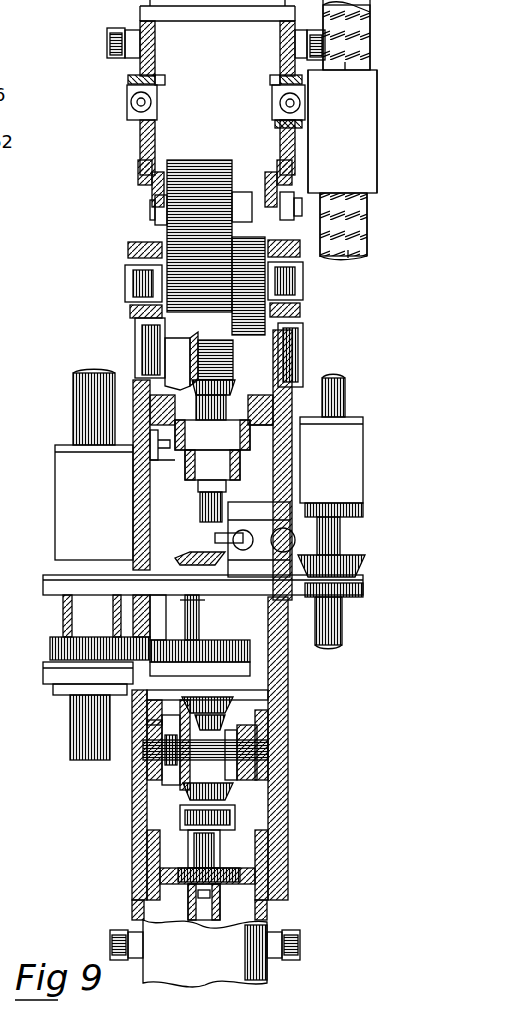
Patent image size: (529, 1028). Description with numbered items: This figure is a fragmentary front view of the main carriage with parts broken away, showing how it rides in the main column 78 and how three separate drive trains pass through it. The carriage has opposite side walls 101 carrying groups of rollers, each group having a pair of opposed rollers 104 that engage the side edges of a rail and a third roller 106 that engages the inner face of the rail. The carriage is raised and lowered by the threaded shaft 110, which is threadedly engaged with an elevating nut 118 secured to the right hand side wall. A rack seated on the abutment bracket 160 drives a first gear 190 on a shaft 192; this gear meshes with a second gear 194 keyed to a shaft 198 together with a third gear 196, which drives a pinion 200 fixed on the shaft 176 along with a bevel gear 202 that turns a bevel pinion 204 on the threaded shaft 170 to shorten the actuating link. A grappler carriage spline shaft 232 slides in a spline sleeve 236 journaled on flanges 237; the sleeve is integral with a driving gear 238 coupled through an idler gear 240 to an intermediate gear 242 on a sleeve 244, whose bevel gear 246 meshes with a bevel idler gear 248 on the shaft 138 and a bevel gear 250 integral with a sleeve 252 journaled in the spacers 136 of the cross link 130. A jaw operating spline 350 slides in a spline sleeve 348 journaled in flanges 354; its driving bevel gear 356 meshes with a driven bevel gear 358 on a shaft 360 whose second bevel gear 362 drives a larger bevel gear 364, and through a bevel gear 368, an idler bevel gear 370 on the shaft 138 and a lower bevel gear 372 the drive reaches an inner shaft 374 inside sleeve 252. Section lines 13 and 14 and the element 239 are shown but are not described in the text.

The side wall 101 is at (280, 157).
The opposed rollers 104 is at (112, 42).
The third roller 106 is at (128, 102).
The threaded shaft 110 is at (360, 225).
The elevating nut 118 is at (355, 92).
The first gear 190 is at (185, 205).
The shaft 192 is at (165, 213).
The second gear 194 is at (175, 295).
The third gear 196 is at (263, 288).
The shaft 198 is at (168, 280).
The pinion 200 is at (262, 352).
The shaft 176 is at (262, 340).
The bevel gear 202 is at (188, 342).
The bevel pinion 204 is at (196, 388).
The threaded shaft 170 is at (205, 500).
The grappler carriage spline shaft 232 is at (95, 424).
The spline sleeve 236 is at (66, 502).
The main column 78 is at (0, 472).
The jaw operating spline 350 is at (345, 387).
The spline sleeve 348 is at (352, 456).
The shaft 360 is at (252, 538).
The second bevel gear 362 is at (228, 540).
The larger bevel gear 364 is at (190, 560).
The driven bevel gear 358 is at (317, 564).
The flanges 354 is at (360, 503).
The driving bevel gear 356 is at (342, 545).
The flanges 237 is at (47, 582).
The section line 13 is at (12, 532).
The abutment bracket 160 is at (25, 644).
The section line 14 is at (50, 650).
The driving gear 238 is at (48, 670).
The shaft 239 is at (52, 688).
The sleeve 244 is at (230, 616).
The idler gear 240 is at (180, 648).
The intermediate gear 242 is at (230, 648).
The cross link 130 is at (280, 818).
The bevel gear 246 is at (230, 700).
The bevel gear 368 is at (225, 718).
The idler bevel gear 370 is at (238, 745).
The shaft 138 is at (270, 750).
The bevel idler gear 248 is at (165, 765).
The lower bevel gear 372 is at (190, 790).
The bevel gear 250 is at (200, 815).
The spacers 136 is at (268, 872).
The sleeve 252 is at (192, 848).
The inner shaft 374 is at (190, 870).